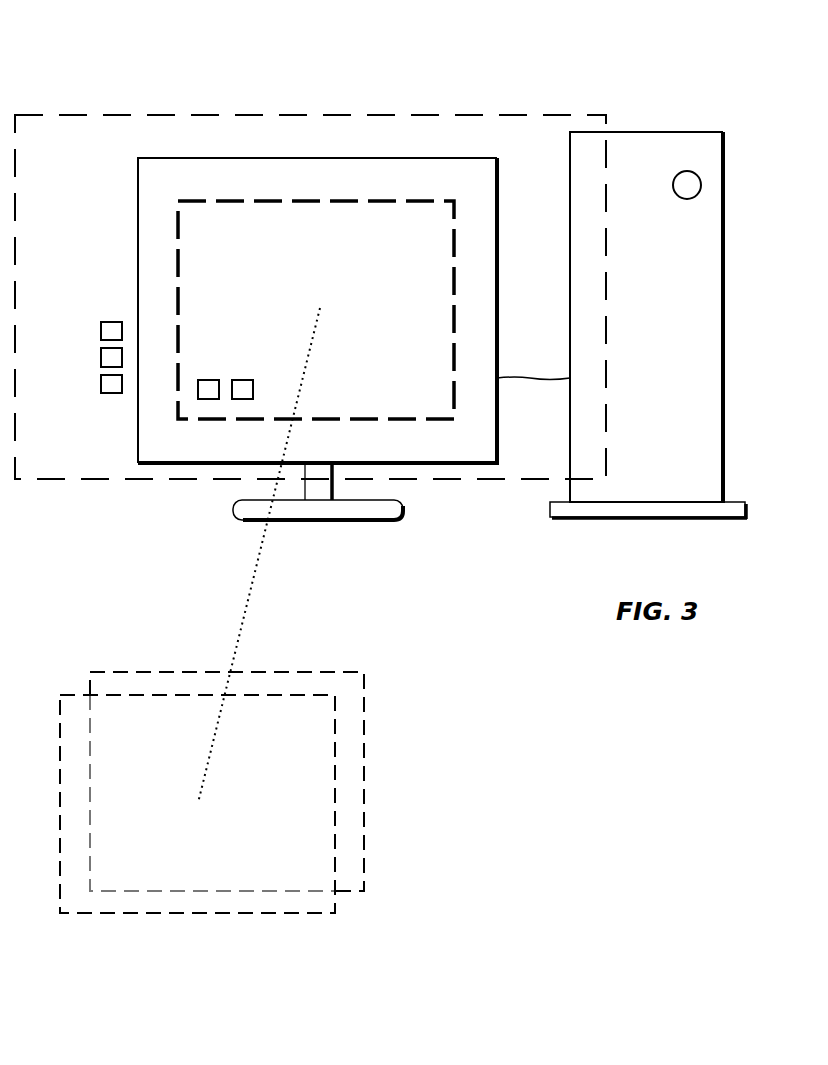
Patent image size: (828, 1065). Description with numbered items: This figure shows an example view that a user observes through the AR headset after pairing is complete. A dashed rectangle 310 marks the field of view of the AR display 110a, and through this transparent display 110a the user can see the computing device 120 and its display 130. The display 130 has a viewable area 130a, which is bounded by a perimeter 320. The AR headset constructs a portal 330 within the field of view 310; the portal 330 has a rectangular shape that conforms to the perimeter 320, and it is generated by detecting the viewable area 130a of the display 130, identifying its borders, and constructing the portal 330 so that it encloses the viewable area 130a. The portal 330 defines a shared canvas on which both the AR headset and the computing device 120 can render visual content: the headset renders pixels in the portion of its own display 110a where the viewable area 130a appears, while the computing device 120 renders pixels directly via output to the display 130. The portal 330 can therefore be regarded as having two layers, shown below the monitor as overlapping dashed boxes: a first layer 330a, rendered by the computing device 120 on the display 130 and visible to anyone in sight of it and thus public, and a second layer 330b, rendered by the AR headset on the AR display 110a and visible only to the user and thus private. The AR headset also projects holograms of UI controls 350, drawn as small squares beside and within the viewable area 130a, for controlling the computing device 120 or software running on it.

The field of view 310 is at (138, 38).
The AR display 110a is at (171, 86).
The display 130 is at (263, 158).
The viewable area 130a is at (393, 222).
The computing device 120 is at (636, 132).
The perimeter 320 is at (335, 248).
The portal 330 is at (299, 307).
The first layer 330a is at (335, 805).
The second layer 330b is at (364, 742).
The UI controls 350 is at (215, 404).